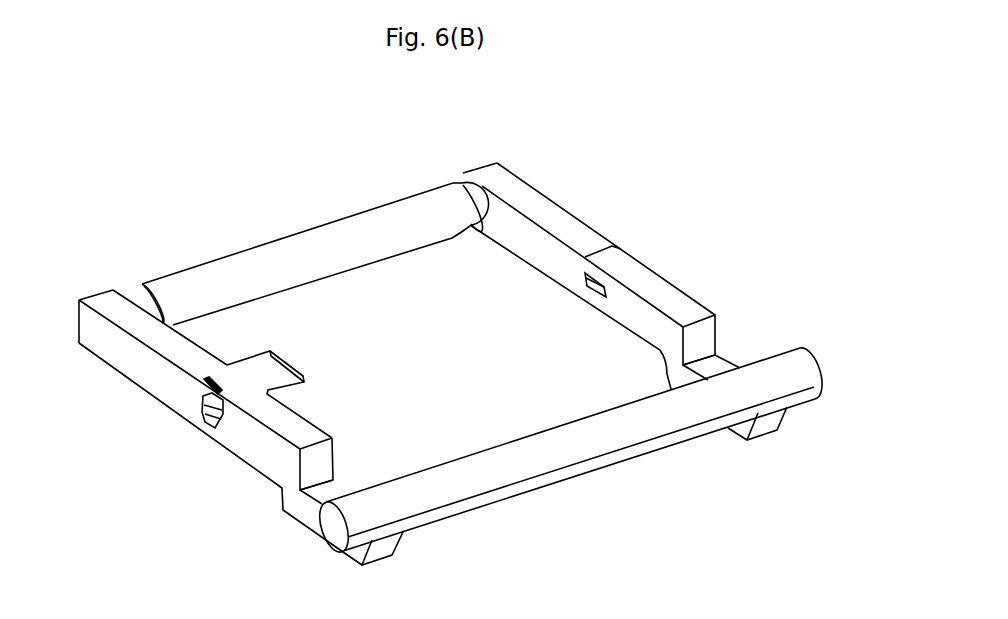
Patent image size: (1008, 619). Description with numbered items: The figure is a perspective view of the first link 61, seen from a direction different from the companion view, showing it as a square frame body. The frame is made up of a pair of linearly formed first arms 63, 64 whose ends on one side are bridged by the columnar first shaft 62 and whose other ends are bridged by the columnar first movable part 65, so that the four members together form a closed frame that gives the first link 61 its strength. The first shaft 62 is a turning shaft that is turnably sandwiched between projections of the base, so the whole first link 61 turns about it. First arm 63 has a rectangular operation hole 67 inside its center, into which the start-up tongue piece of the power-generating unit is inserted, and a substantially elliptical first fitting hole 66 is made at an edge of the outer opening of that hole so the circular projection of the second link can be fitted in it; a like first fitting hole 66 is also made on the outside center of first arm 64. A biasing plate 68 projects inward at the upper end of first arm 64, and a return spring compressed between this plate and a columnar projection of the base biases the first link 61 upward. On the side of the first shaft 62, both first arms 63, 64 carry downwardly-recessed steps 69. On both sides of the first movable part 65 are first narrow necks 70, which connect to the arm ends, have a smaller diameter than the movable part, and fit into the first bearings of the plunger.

The first link 61 is at (690, 127).
The first shaft 62 is at (575, 445).
The first arm 63 is at (656, 294).
The first arm 64 is at (248, 445).
The first movable part 65 is at (273, 252).
The first fitting hole 66 is at (198, 403).
The operation hole 67 is at (598, 275).
The biasing plate 68 is at (283, 363).
The downwardly-recessed step 69 is at (330, 495).
The first narrow neck 70 is at (139, 292).